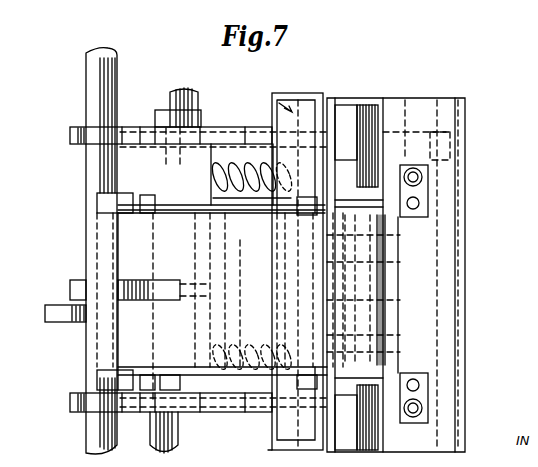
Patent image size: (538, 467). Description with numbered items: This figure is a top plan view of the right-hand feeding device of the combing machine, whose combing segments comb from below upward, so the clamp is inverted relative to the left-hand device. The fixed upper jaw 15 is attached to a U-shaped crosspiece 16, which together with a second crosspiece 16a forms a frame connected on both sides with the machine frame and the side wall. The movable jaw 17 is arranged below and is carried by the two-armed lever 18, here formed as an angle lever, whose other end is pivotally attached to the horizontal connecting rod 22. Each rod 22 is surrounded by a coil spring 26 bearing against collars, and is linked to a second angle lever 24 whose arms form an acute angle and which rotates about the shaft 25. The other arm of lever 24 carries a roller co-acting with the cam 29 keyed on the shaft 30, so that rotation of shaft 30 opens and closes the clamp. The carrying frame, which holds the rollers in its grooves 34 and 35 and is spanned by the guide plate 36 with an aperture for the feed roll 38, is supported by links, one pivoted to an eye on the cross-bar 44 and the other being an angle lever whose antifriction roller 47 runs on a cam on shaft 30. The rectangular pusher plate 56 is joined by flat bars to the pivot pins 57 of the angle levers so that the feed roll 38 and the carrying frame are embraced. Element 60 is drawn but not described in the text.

The shaft 30 is at (92, 190).
The cross bar 60 is at (72, 135).
The shaft 25 is at (200, 101).
The pivot pins 57 is at (162, 105).
The groove 35 is at (147, 195).
The coil spring 26 is at (237, 150).
The connecting rod 22 is at (250, 404).
The cross-bar 44 is at (292, 108).
The second crosspiece 16a is at (285, 104).
The crosspiece 16 is at (420, 100).
The two-armed lever 18 is at (406, 97).
The pusher plate 56 is at (432, 122).
The fixed jaw 15 is at (456, 244).
The movable jaw 17 is at (458, 270).
The groove 34 is at (300, 212).
The feed roll 38 is at (282, 247).
The guide plate 36 is at (235, 290).
The two-armed lever 24 is at (148, 287).
The cam 29 is at (70, 289).
The antifriction roller 47 is at (60, 327).